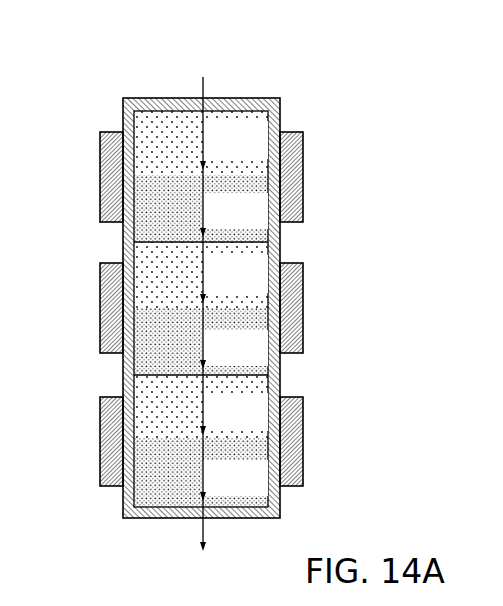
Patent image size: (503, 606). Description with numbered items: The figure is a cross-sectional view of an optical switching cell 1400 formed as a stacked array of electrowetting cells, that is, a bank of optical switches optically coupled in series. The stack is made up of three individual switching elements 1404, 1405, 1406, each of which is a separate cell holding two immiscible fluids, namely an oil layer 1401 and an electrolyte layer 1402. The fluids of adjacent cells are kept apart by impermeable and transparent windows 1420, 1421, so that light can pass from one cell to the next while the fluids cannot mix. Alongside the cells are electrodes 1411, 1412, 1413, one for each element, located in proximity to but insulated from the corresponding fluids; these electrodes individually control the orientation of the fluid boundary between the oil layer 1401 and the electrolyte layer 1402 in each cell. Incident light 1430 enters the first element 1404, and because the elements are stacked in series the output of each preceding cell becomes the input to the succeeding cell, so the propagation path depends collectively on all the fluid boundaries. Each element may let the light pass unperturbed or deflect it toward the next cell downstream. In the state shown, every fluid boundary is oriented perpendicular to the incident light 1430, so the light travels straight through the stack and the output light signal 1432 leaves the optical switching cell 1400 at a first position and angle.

The optical switching cell 1400 is at (253, 287).
The oil layer 1401 is at (251, 152).
The electrolyte layer 1402 is at (251, 223).
The first switching element 1404 is at (260, 303).
The second switching element 1405 is at (313, 255).
The third switching element 1406 is at (313, 387).
The first electrode 1411 is at (101, 177).
The second electrode 1412 is at (101, 288).
The third electrode 1413 is at (101, 420).
The first window 1420 is at (168, 242).
The second window 1421 is at (168, 375).
The incident light 1430 is at (202, 94).
The output light signal 1432 is at (200, 533).